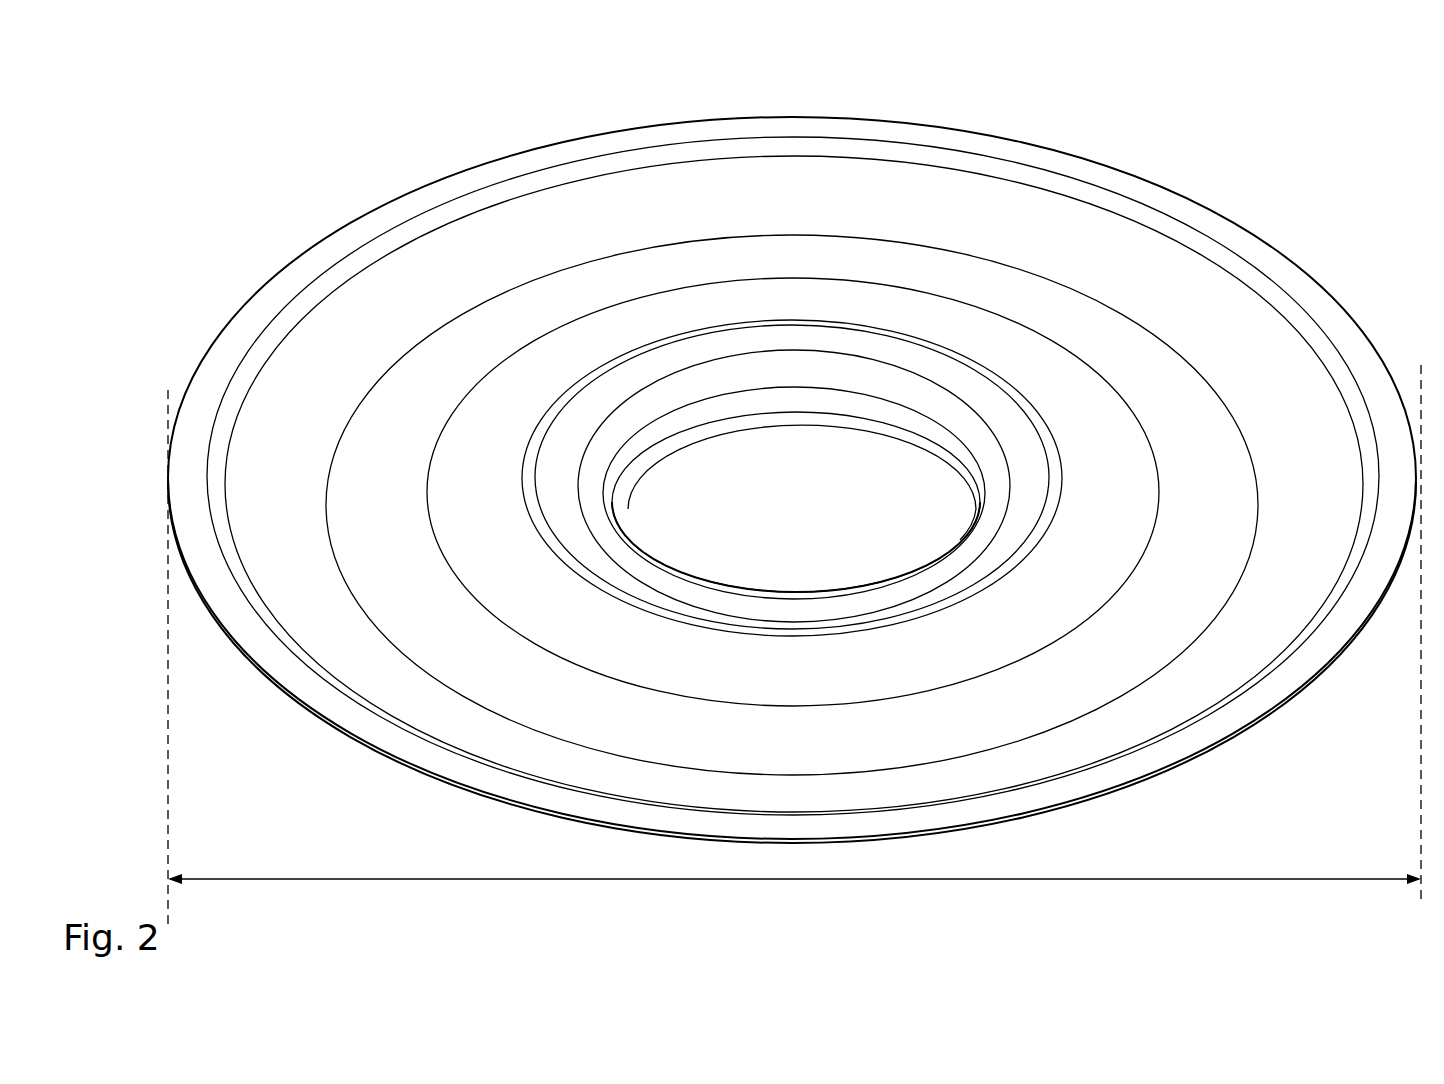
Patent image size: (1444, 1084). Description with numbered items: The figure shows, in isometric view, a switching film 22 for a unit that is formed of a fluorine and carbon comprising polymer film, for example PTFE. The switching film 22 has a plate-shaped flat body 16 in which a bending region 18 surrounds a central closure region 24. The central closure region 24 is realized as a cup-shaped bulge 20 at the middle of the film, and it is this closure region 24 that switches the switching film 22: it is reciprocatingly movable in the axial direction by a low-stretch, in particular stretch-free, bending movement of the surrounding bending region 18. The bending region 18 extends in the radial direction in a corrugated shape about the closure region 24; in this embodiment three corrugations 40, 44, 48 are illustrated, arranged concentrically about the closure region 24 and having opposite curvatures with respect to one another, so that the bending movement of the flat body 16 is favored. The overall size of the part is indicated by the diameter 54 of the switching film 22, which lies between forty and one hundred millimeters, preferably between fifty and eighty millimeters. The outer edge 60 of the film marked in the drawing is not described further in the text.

The plate-shaped flat body 16 is at (578, 203).
The bending region 18 is at (408, 288).
The cup-shaped bulge 20 is at (628, 497).
The switching film 22 is at (1300, 154).
The central closure region 24 is at (762, 515).
The corrugation 40 is at (1313, 420).
The corrugation 44 is at (1008, 287).
The corrugation 48 is at (1082, 402).
The diameter 54 is at (1272, 878).
The outer edge 60 is at (247, 317).